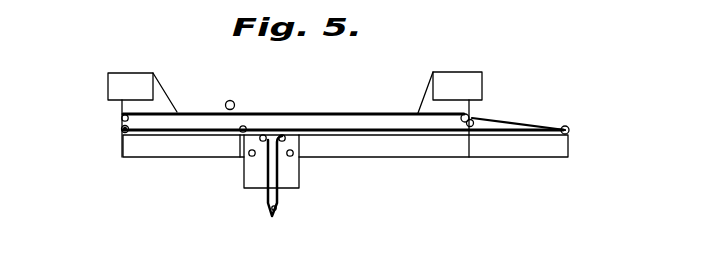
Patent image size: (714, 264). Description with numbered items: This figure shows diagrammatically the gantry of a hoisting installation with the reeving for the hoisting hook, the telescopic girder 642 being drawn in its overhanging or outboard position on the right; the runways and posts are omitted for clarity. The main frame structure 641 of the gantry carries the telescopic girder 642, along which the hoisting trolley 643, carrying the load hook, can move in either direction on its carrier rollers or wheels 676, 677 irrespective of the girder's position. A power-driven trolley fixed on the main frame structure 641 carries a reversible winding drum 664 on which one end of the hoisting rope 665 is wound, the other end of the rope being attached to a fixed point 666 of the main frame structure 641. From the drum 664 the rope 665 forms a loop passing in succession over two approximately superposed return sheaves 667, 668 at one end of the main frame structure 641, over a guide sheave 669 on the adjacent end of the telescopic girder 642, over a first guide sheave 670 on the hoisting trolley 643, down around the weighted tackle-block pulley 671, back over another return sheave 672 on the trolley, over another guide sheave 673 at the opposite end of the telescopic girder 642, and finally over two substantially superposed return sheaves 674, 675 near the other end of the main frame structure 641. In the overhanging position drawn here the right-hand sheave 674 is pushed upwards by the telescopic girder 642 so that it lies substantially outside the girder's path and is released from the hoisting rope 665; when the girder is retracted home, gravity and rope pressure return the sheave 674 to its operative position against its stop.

The main frame structure 641 is at (100, 82).
The telescopic girder 642 is at (534, 147).
The hoisting trolley 643 is at (292, 180).
The winding drum 664 is at (232, 100).
The hoisting rope 665 is at (176, 134).
The fixed point 666 is at (416, 108).
The return sheave 667 is at (121, 118).
The return sheave 668 is at (122, 131).
The guide sheave 669 is at (245, 126).
The first guide sheave 670 is at (266, 136).
The weighted tackle-block pulley 671 is at (279, 210).
The return sheave 672 is at (285, 140).
The guide sheave 673 is at (569, 130).
The return sheave 674 is at (476, 118).
The return sheave 675 is at (471, 116).
The carrier roller 676 is at (254, 156).
The carrier roller 677 is at (292, 155).